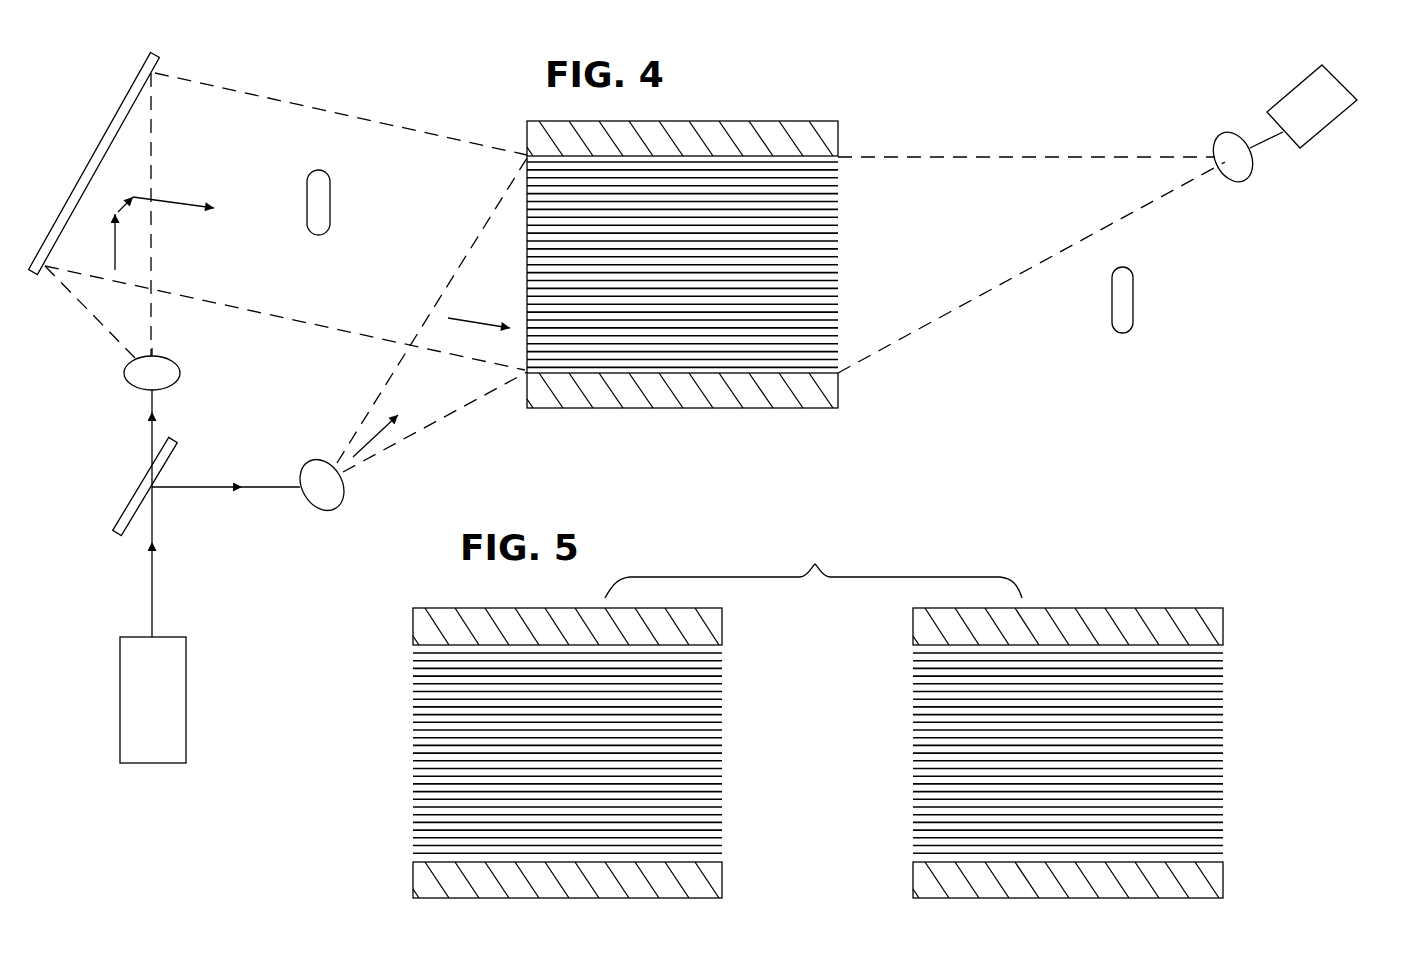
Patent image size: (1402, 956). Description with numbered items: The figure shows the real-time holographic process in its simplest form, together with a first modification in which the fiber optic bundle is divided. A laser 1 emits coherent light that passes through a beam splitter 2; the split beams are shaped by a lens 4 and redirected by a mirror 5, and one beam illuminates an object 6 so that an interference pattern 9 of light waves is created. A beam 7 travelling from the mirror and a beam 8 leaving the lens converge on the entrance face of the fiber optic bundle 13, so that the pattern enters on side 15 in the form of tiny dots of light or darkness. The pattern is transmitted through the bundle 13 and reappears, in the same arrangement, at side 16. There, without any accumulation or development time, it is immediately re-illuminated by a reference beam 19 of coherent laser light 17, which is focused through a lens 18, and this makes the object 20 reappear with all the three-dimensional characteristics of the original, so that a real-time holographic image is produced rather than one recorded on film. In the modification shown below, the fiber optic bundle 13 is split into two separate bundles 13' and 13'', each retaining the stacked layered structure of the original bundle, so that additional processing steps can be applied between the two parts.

In FIG. 4, the laser 1 is at (120, 663).
In FIG. 4, the beam splitter 2 is at (140, 480).
In FIG. 4, the lens 4 is at (325, 512).
In FIG. 4, the mirror 5 is at (113, 118).
In FIG. 4, the object 6 is at (317, 203).
In FIG. 4, the reference beam 7 is at (247, 113).
In FIG. 4, the object beam 8 is at (373, 425).
In FIG. 4, the interference pattern 9 is at (467, 341).
In FIG. 4, the fiber optic bundle 13 is at (726, 276).
In FIG. 5, the fiber optic bundle 13 is at (813, 566).
In FIG. 5, the bundle 13' is at (607, 753).
In FIG. 5, the bundle 13'' is at (1100, 753).
In FIG. 4, the side 15 is at (527, 235).
In FIG. 4, the side 16 is at (838, 217).
In FIG. 4, the coherent laser light 17 is at (1350, 108).
In FIG. 4, the lens 18 is at (1212, 140).
In FIG. 4, the reference beam 19 is at (1065, 176).
In FIG. 4, the object 20 is at (1133, 277).